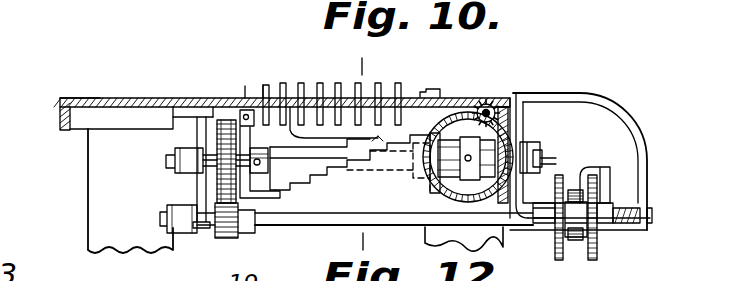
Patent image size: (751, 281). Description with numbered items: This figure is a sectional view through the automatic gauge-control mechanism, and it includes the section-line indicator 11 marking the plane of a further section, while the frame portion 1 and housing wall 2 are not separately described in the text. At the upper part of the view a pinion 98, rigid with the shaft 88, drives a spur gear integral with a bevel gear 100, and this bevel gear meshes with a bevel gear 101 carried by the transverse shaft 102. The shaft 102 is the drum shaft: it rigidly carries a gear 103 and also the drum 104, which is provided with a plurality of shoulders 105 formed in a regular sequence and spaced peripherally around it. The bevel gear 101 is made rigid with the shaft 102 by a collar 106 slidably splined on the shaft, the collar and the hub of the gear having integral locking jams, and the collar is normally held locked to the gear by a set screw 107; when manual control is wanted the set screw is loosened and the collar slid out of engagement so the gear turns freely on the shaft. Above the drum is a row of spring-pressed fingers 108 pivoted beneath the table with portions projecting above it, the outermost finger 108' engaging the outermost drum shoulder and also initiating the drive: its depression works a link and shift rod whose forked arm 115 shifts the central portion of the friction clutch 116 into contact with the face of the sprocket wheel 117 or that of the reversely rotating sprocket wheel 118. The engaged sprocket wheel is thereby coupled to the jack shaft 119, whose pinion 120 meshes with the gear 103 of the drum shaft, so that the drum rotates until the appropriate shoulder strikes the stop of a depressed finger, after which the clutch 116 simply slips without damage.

The machine frame 1 is at (98, 96).
The housing wall 2 is at (107, 152).
The section line 11- 11 is at (387, 68).
The shaft 88 is at (481, 104).
The pinion 98 is at (500, 116).
The bevel gear 100 is at (464, 108).
The bevel gear 101 is at (499, 138).
The transverse shaft 102 is at (170, 160).
The gear 103 is at (220, 132).
The drum 104 is at (355, 178).
The shoulders 105 is at (262, 92).
The collar 106 is at (472, 137).
The set screw 107 is at (467, 165).
The fingers 108 is at (282, 84).
The outermost finger 108' is at (197, 96).
The forked arm 115 is at (581, 188).
The clutch 116 is at (643, 167).
The sprocket wheel 117 is at (553, 253).
The reversely rotating sprocket wheel 118 is at (603, 257).
The jack shaft 119 is at (167, 220).
The pinion 120 is at (228, 243).